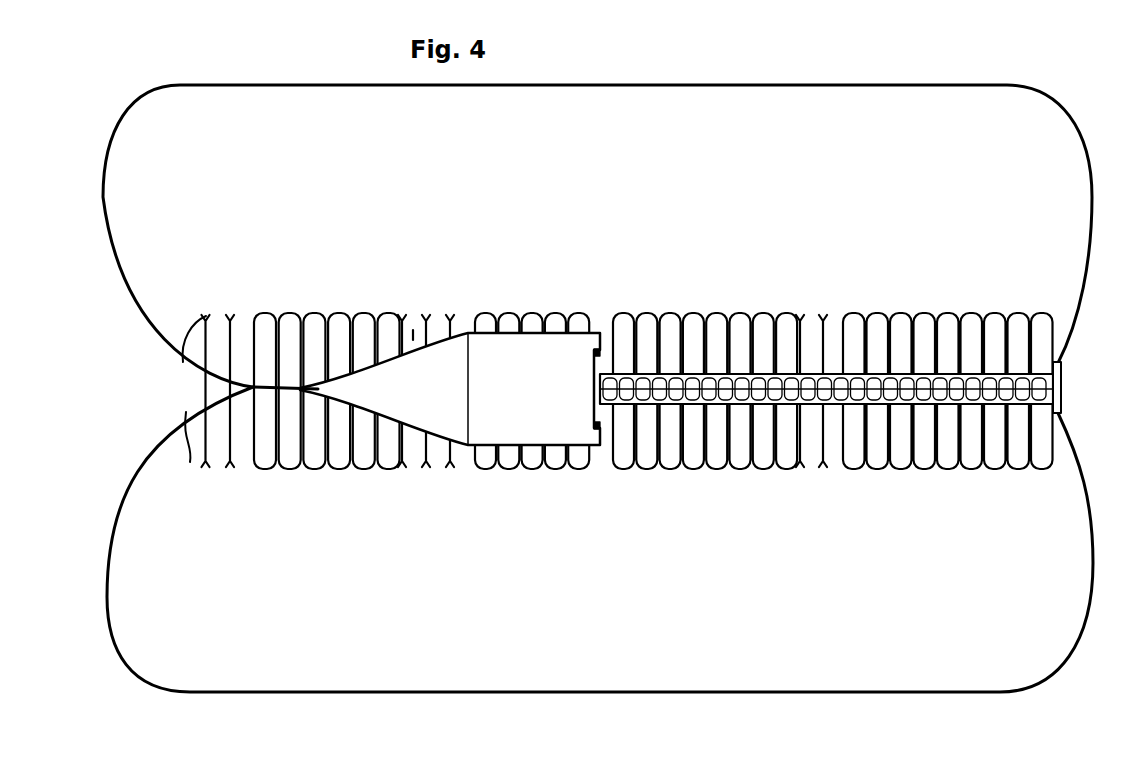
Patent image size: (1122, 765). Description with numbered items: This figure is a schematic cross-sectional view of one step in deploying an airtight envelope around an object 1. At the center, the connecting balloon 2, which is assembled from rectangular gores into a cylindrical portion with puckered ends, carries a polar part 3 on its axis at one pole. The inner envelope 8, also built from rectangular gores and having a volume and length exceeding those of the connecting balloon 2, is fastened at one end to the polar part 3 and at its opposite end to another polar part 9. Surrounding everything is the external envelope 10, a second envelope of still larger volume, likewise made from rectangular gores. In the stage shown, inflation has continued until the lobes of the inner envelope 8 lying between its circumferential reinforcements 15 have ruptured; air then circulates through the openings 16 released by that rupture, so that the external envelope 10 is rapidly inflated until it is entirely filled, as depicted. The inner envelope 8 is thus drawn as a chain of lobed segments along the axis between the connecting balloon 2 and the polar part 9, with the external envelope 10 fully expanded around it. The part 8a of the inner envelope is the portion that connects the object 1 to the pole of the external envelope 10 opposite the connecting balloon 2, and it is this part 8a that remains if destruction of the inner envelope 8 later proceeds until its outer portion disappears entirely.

The object 1 is at (468, 386).
The connecting balloon 2 is at (834, 405).
The polar part 3 is at (1063, 398).
The inner envelope 8 is at (741, 314).
The connecting part of the inner envelope 8a is at (265, 386).
The polar part 9 is at (595, 352).
The external envelope 10 is at (763, 86).
The circumferential reinforcements 15 is at (402, 335).
The openings 16 is at (413, 312).